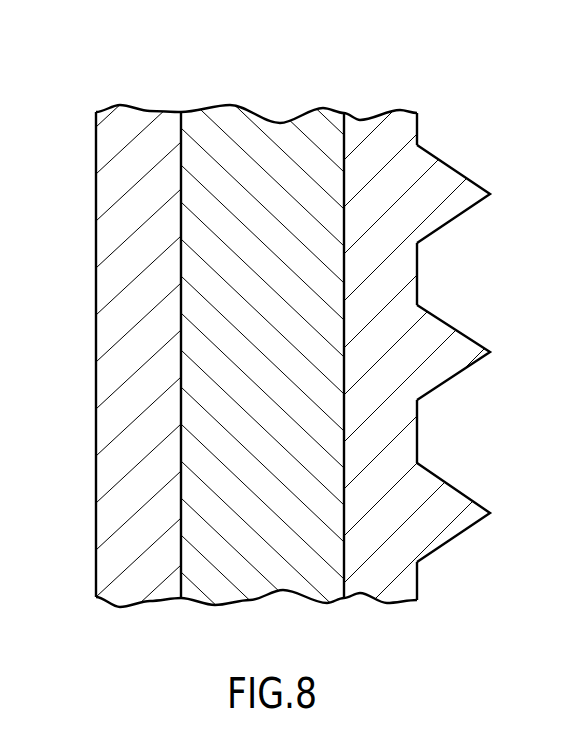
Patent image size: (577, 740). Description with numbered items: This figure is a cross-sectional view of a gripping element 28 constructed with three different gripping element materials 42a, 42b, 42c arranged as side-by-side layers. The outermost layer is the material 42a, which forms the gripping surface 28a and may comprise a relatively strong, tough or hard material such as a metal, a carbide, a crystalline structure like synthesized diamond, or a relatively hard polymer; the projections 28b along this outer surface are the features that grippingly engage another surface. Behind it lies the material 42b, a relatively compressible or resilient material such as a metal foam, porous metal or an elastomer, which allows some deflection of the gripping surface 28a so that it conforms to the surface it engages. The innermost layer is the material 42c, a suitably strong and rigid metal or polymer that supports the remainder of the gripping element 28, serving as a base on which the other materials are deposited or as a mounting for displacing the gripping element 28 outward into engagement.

The gripping element 28 is at (301, 363).
The gripping surface 28a is at (418, 430).
The protrusions / teeth of outer surface 28b is at (458, 167).
The gripping element material 42a is at (383, 278).
The gripping element material 42b is at (323, 585).
The gripping element material 42c is at (125, 446).